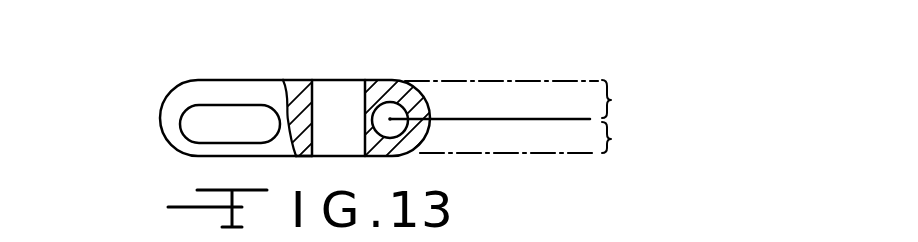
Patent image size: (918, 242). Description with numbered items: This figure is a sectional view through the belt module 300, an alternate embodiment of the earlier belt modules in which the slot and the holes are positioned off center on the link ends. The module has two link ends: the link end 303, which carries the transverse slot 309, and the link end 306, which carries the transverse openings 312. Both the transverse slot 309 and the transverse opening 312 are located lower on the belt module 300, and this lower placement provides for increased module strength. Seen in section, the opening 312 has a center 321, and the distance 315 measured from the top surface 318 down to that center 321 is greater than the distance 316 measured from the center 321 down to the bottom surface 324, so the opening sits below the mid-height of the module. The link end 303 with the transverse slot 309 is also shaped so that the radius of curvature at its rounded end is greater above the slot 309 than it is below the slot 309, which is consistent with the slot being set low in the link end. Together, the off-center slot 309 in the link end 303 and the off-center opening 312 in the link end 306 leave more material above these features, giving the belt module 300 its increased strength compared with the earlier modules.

The belt module 300 is at (335, 58).
The link end 303 is at (193, 66).
The link end 306 is at (562, 32).
The transverse slot 309 is at (195, 121).
The transverse opening 312 is at (390, 119).
The distance 315 is at (612, 99).
The distance 316 is at (617, 140).
The top surface 318 is at (302, 79).
The center 321 is at (548, 119).
The bottom surface 324 is at (300, 157).